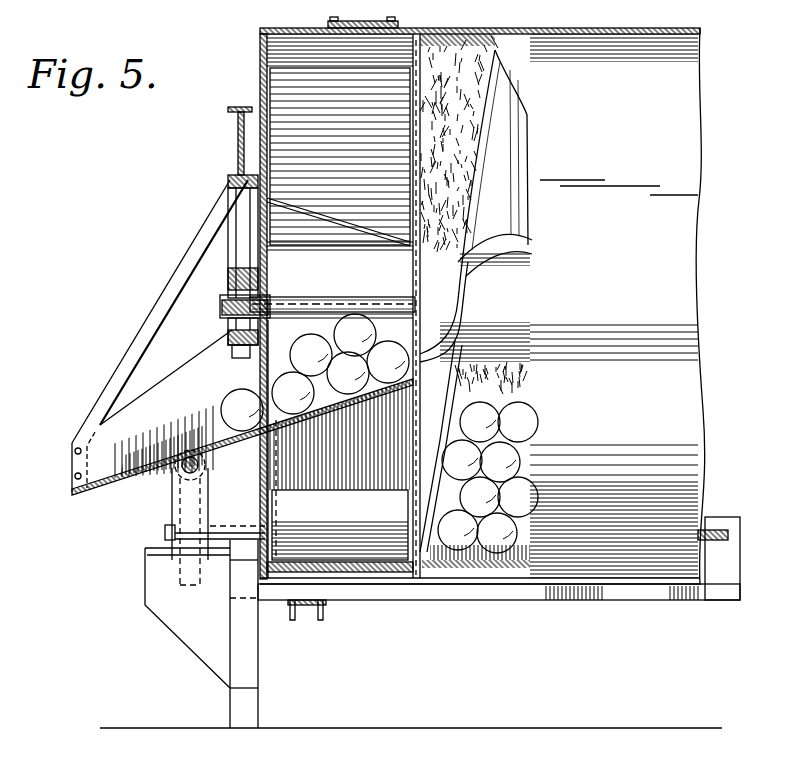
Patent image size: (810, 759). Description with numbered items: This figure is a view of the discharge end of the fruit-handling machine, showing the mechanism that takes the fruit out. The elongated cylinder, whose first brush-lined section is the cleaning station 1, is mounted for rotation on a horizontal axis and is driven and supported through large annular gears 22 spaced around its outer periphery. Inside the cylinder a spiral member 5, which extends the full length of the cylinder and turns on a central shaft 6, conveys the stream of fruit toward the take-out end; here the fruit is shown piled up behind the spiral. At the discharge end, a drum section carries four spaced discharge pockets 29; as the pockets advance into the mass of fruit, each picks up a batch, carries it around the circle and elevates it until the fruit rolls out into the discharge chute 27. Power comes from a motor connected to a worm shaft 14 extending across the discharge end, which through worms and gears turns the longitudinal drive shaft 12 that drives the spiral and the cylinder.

The cleaning station 1 is at (420, 378).
The annular gears 22 is at (362, 28).
The spiral member 5 is at (472, 216).
The central shaft 6 is at (312, 300).
The discharge pockets 29 is at (340, 449).
The discharge chute 27 is at (163, 390).
The worm shaft 14 is at (182, 470).
The drive shaft 12 is at (165, 532).